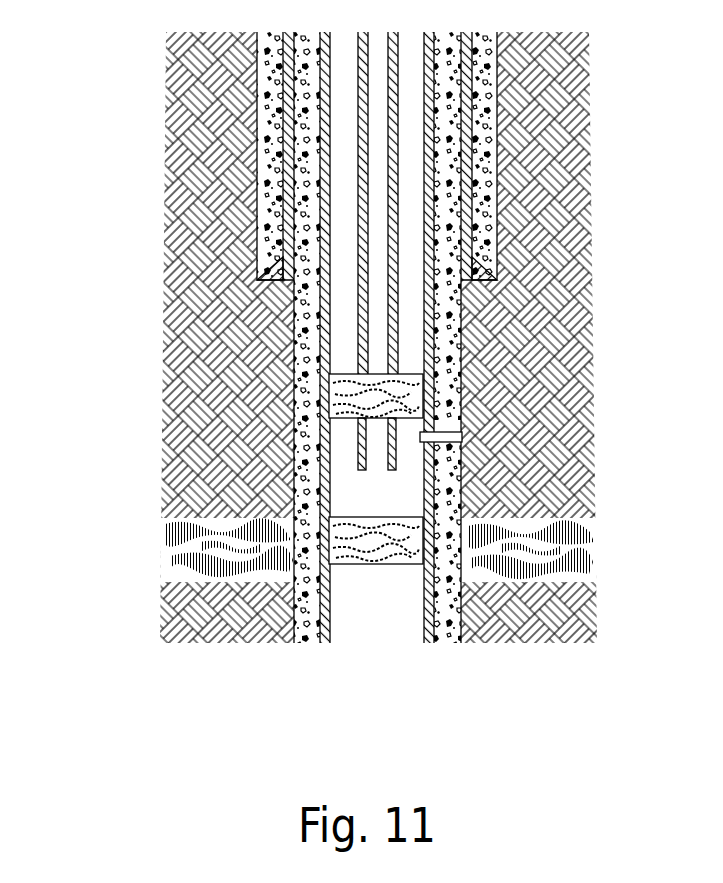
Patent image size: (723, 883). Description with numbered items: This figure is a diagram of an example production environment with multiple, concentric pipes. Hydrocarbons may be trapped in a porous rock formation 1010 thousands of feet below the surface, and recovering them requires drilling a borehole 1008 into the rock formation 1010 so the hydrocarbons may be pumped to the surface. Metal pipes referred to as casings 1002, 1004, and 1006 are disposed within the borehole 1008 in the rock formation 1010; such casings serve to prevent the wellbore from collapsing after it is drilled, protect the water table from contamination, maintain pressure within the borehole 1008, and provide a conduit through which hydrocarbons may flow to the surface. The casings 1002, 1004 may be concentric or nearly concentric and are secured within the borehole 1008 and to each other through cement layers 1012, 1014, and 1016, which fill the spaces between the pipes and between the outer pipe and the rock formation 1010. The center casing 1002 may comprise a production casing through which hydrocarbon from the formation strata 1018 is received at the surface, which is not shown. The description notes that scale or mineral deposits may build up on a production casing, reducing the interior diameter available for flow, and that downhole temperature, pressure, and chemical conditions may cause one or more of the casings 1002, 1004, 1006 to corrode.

The casing 1002 is at (360, 365).
The casing 1004 is at (322, 243).
The casing 1006 is at (285, 88).
The borehole 1008 is at (492, 232).
The rock formation 1010 is at (557, 101).
The cement layer 1012 is at (338, 313).
The cement layer 1014 is at (305, 158).
The cement layer 1016 is at (265, 50).
The formation strata 1018 is at (555, 477).